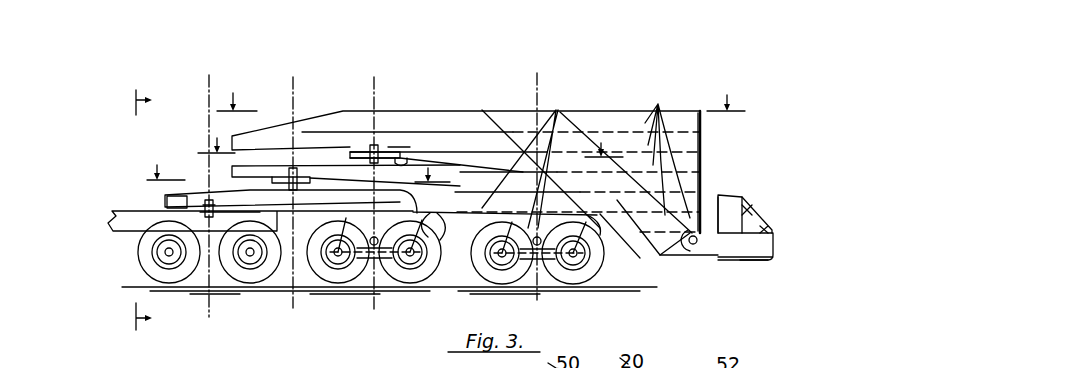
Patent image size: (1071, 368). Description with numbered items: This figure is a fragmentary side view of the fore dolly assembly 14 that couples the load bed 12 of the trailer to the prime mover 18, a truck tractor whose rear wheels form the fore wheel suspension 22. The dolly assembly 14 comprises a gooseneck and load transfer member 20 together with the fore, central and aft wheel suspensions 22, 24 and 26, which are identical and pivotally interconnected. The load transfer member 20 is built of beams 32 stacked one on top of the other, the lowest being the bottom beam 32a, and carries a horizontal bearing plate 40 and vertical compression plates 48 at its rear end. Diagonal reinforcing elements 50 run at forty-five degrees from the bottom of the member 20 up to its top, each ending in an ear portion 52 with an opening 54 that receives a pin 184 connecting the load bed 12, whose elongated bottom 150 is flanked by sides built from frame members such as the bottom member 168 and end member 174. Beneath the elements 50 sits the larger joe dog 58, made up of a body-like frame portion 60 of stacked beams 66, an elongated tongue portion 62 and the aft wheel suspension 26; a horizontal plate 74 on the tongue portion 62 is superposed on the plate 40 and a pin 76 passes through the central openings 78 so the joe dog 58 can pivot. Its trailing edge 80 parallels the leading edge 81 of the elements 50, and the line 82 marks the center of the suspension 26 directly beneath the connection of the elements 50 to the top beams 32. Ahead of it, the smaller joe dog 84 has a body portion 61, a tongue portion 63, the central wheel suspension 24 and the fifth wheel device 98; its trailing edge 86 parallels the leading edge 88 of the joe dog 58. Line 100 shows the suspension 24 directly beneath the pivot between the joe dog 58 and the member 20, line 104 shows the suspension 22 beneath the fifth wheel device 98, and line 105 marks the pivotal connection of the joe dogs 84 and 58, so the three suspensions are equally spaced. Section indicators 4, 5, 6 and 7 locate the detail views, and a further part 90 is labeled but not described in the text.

The section line 4- 4 is at (481, 89).
The section line 5- 5 is at (410, 137).
The section line 6- 6 is at (298, 161).
The section line 7- 7 is at (154, 209).
The load bed 12 is at (770, 210).
The fore dolly assembly 14 is at (455, 128).
The prime mover 18 is at (132, 218).
The gooseneck and load transfer member 20 is at (580, 110).
The fore wheel suspension 22 is at (215, 272).
The central wheel suspension 24 is at (366, 300).
The aft wheel suspension 26 is at (540, 275).
The beams 32 is at (658, 104).
The bottom beam 32a is at (667, 240).
The horizontal bearing plate 40 is at (396, 148).
The compression plates 48 is at (702, 145).
The reinforcing elements 50 is at (645, 218).
The ear portion 52 is at (688, 255).
The opening 54 is at (717, 197).
The larger joe dog 58 is at (472, 190).
The body-like frame portion 60 is at (468, 205).
The body-like frame portion 61 is at (300, 220).
The tongue portion 62 is at (278, 172).
The tongue portion 63 is at (285, 205).
The stacked beams 66 is at (558, 110).
The horizontal plate 74 is at (403, 157).
The pin 76 is at (278, 172).
The openings 78 is at (300, 172).
The trailing edge 80 is at (608, 266).
The leading edge 81 is at (623, 233).
The line 82 is at (537, 73).
The smaller joe dog 84 is at (243, 197).
The trailing edge 86 is at (370, 277).
The leading edge 88 is at (432, 222).
The shaft 90 is at (295, 277).
The fifth wheel device 98 is at (170, 198).
The line 100 is at (372, 76).
The line 104 is at (207, 75).
The line 105 is at (291, 76).
The elongated bottom 150 is at (763, 263).
The frame member 168 is at (763, 248).
The end member 174 is at (730, 205).
The pin 184 is at (692, 257).